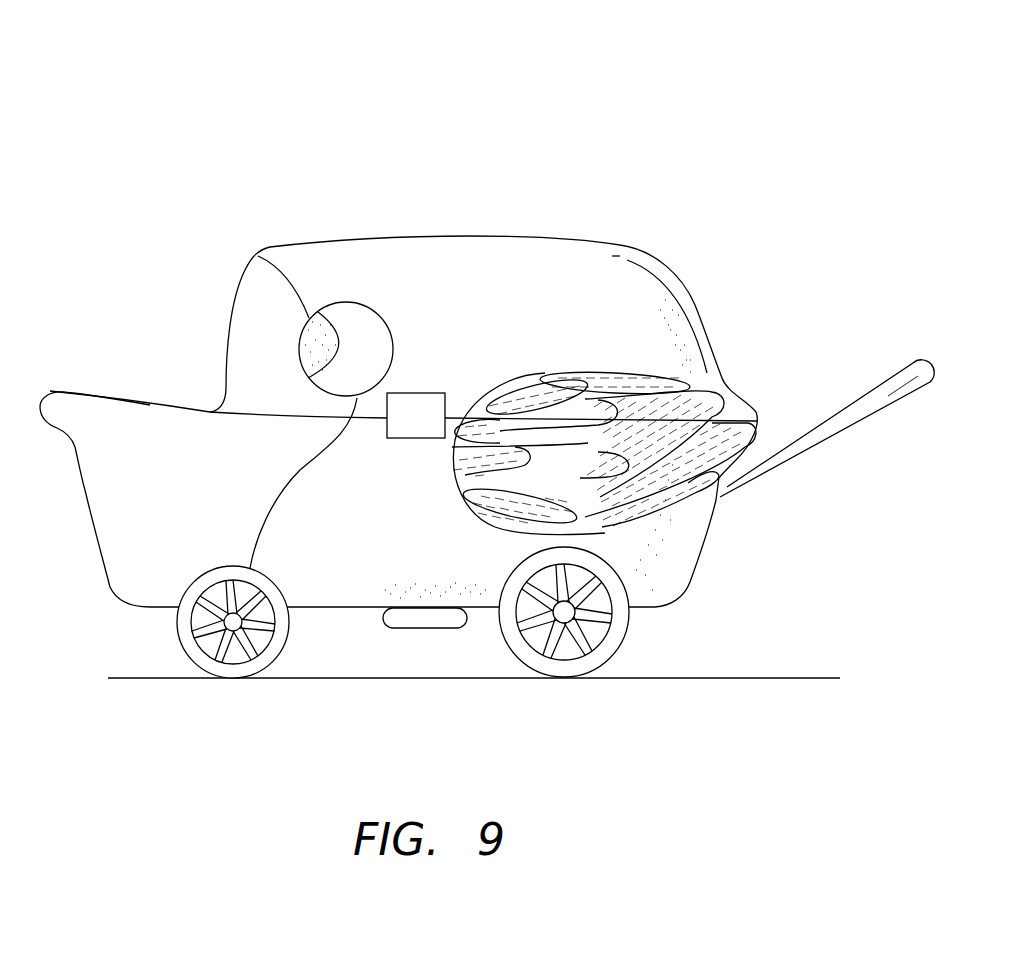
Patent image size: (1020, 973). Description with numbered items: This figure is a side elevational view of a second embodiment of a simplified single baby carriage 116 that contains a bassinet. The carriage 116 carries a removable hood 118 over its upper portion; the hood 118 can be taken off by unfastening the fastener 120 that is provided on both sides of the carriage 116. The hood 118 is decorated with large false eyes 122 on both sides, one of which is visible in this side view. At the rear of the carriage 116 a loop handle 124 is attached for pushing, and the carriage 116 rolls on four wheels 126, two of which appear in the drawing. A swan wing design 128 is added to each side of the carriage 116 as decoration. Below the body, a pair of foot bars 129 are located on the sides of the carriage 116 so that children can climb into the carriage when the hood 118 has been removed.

The baby carriage 116 is at (325, 168).
The removable hood 118 is at (583, 242).
The fastener 120 is at (414, 440).
The false eyes 122 is at (297, 347).
The loop handle 124 is at (912, 358).
The wheels 126 is at (198, 662).
The swan wing design 128 is at (608, 368).
The foot bars 129 is at (415, 629).